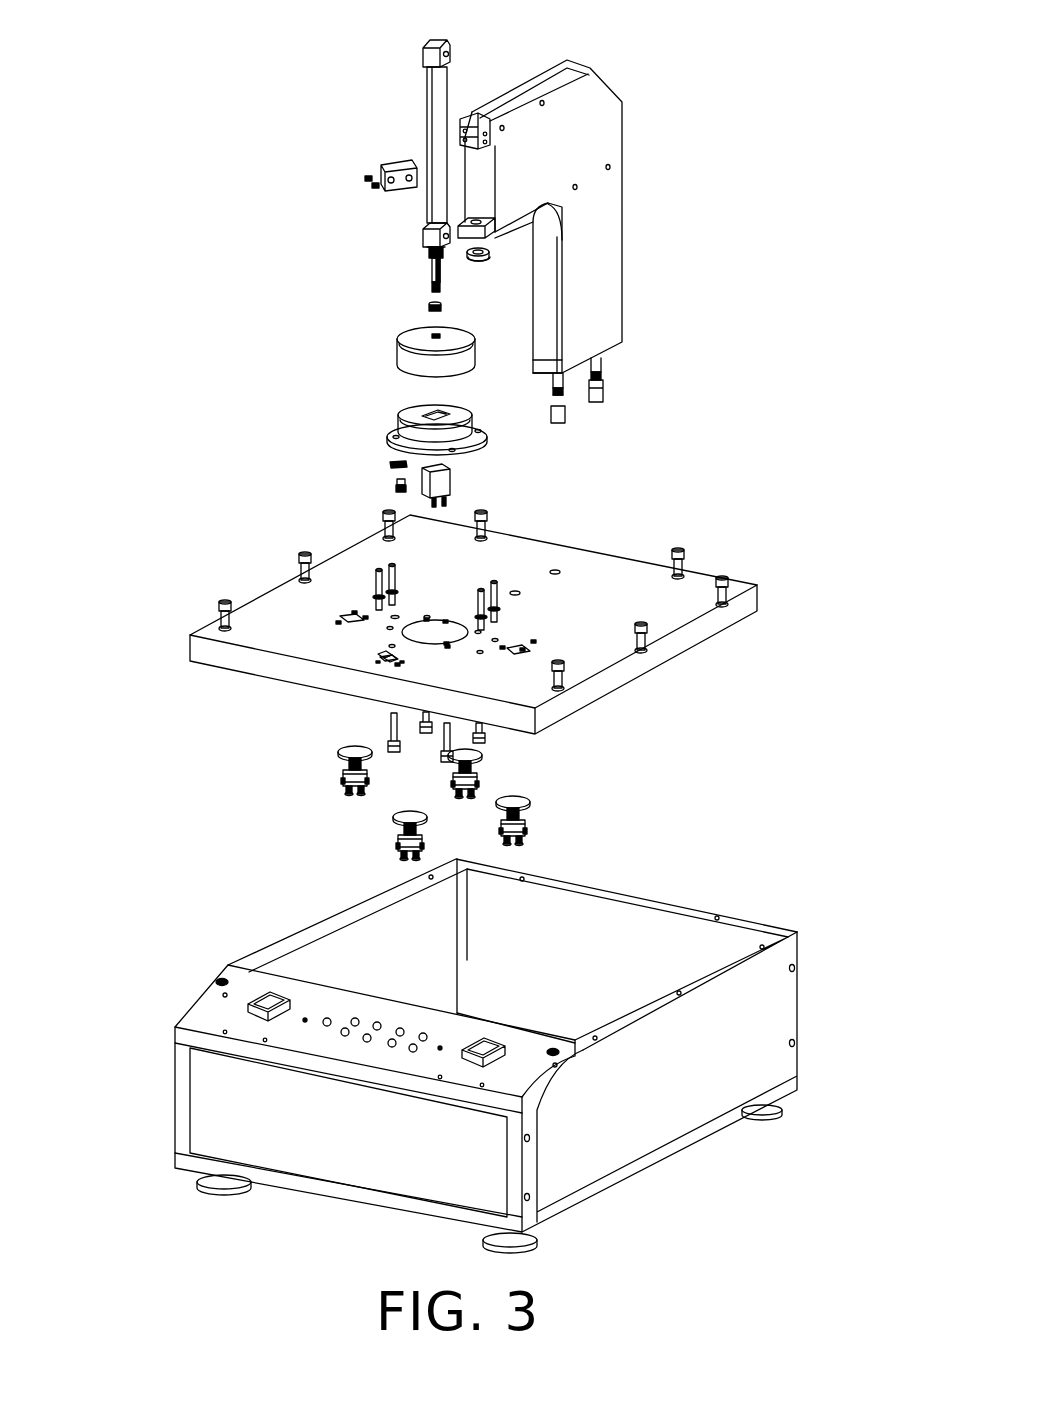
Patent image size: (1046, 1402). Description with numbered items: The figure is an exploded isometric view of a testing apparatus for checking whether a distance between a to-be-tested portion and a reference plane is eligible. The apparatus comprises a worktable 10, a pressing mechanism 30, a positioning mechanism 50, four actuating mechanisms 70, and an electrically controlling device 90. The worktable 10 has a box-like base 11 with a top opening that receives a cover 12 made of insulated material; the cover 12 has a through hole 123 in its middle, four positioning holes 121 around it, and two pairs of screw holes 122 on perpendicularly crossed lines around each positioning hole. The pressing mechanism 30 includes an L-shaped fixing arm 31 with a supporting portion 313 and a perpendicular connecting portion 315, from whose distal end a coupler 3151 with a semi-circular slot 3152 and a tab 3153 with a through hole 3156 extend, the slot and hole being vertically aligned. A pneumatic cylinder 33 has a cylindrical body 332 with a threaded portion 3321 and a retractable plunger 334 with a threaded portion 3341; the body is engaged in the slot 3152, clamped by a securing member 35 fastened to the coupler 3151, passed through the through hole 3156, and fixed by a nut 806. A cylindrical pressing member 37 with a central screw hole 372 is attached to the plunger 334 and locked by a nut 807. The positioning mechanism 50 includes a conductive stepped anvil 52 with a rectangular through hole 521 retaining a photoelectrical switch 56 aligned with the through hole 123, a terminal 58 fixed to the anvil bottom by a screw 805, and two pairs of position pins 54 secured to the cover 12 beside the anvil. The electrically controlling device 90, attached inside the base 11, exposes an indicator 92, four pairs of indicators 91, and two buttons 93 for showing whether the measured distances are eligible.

The worktable 10 is at (785, 743).
The base 11 is at (660, 906).
The cover 12 is at (667, 653).
The positioning holes 121 is at (393, 657).
The screw holes 122 is at (382, 656).
The through hole 123 is at (457, 633).
The pressing mechanism 30 is at (380, 220).
The fixing arm 31 is at (732, 97).
The supporting portion 313 is at (602, 255).
The connecting portion 315 is at (533, 157).
The coupler 3151 is at (543, 115).
The semi-circular slot 3152 is at (480, 117).
The tab 3153 is at (482, 230).
The through hole 3156 is at (475, 214).
The pneumatic cylinder 33 is at (405, 100).
The cylindrical body 332 is at (438, 92).
The threaded portion 3321 is at (427, 250).
The plunger 334 is at (431, 268).
The threaded portion 3341 is at (426, 285).
The securing member 35 is at (381, 163).
The pressing member 37 is at (400, 353).
The screw hole 372 is at (440, 337).
The positioning mechanism 50 is at (300, 390).
The anvil 52 is at (398, 422).
The rectangular through hole 521 is at (433, 418).
The position pins 54 is at (377, 572).
The photoelectrical switch 56 is at (430, 480).
The terminal 58 is at (391, 465).
The actuating mechanisms 70 is at (343, 763).
The screw 805 is at (455, 496).
The nut 806 is at (488, 262).
The nut 807 is at (427, 310).
The electrically controlling device 90 is at (203, 1007).
The indicators 91 is at (345, 1028).
The indicator 92 is at (328, 1019).
The buttons 93 is at (263, 993).